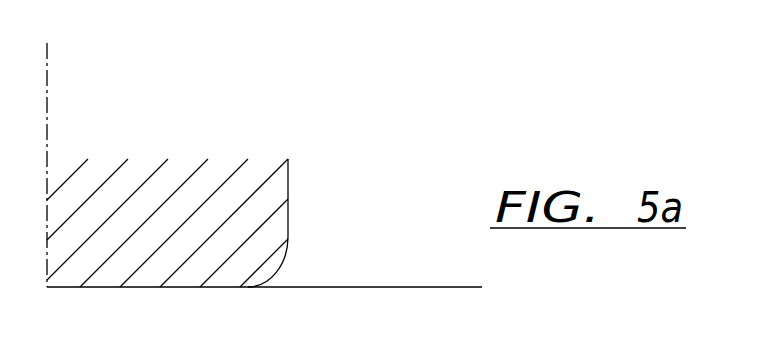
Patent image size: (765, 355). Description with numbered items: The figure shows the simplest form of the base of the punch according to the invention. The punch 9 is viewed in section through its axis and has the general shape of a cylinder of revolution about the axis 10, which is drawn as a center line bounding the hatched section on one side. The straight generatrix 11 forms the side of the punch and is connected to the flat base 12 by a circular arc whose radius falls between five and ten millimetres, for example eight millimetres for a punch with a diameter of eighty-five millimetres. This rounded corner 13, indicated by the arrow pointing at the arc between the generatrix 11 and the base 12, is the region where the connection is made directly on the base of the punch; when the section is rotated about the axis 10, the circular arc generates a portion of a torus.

The punch 9 is at (245, 200).
The axis 10 is at (47, 127).
The generatrix 11 is at (288, 222).
The base 12 is at (170, 288).
The rounded edge with radius R1 13 is at (273, 278).